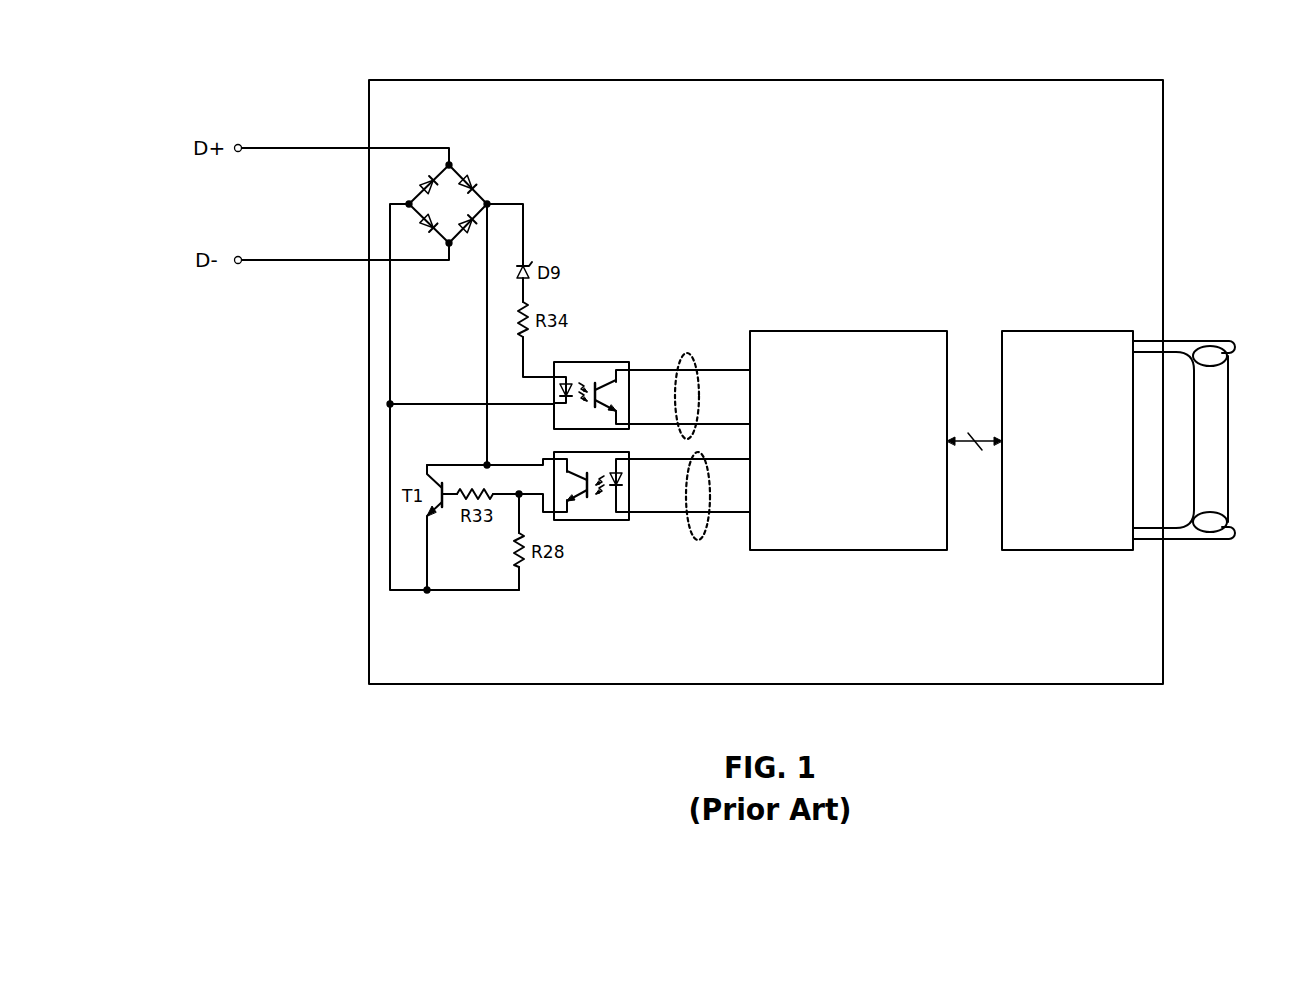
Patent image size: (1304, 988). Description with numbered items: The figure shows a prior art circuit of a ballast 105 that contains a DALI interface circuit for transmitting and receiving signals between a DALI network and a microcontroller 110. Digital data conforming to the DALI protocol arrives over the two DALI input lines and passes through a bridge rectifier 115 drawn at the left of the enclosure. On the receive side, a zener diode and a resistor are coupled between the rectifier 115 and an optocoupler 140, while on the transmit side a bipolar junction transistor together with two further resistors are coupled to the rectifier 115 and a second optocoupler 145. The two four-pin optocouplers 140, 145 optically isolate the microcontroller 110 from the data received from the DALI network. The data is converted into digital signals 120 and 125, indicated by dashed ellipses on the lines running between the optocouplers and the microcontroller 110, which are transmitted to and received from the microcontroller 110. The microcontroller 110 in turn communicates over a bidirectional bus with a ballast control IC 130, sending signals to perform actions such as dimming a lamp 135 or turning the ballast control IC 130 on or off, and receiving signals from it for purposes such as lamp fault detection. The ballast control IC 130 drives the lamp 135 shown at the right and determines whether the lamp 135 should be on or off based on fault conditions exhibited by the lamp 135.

The ballast 105 is at (752, 80).
The microcontroller 110 is at (857, 331).
The bridge rectifier 115 is at (457, 170).
The digital signal 120 is at (687, 353).
The digital signal 125 is at (698, 540).
The ballast control IC 130 is at (1053, 331).
The lamp 135 is at (1228, 448).
The optocoupler 140 is at (598, 362).
The optocoupler 145 is at (592, 522).